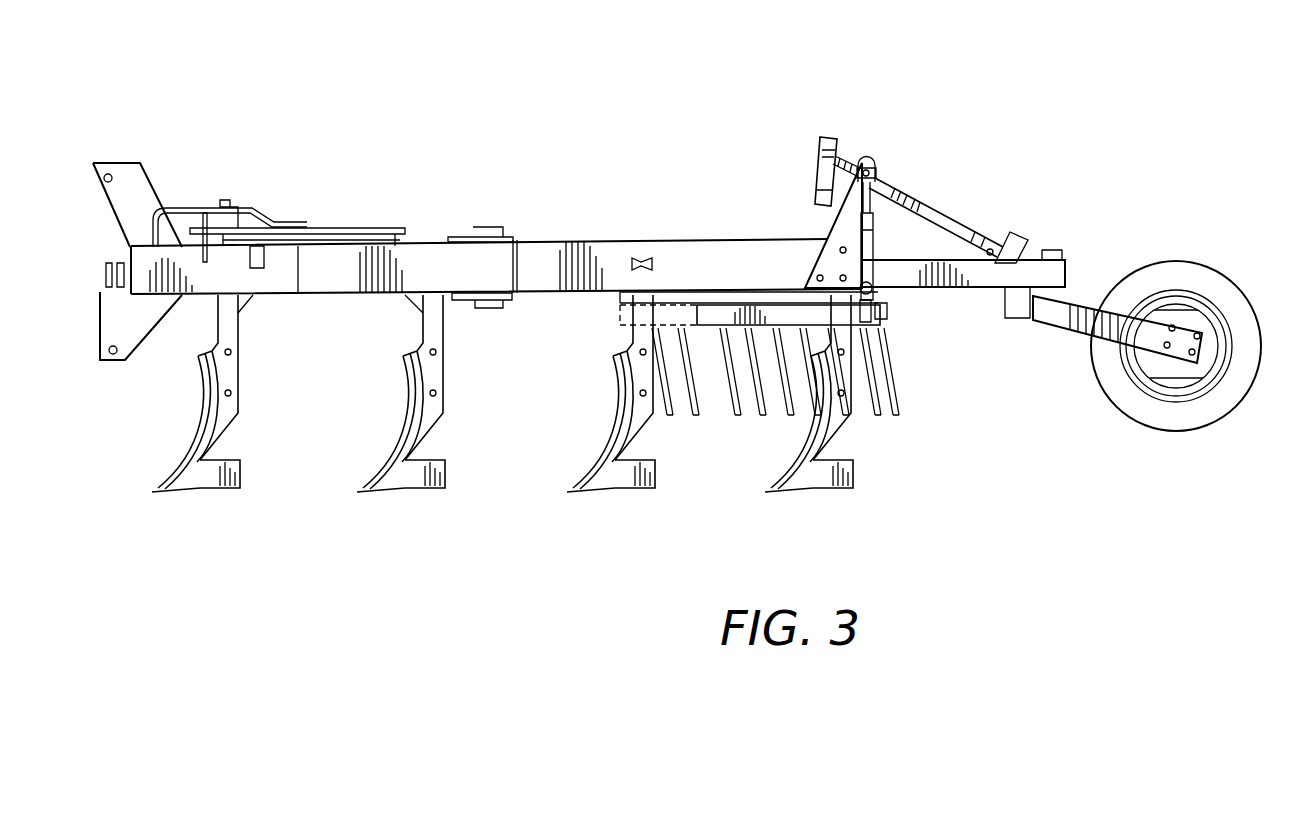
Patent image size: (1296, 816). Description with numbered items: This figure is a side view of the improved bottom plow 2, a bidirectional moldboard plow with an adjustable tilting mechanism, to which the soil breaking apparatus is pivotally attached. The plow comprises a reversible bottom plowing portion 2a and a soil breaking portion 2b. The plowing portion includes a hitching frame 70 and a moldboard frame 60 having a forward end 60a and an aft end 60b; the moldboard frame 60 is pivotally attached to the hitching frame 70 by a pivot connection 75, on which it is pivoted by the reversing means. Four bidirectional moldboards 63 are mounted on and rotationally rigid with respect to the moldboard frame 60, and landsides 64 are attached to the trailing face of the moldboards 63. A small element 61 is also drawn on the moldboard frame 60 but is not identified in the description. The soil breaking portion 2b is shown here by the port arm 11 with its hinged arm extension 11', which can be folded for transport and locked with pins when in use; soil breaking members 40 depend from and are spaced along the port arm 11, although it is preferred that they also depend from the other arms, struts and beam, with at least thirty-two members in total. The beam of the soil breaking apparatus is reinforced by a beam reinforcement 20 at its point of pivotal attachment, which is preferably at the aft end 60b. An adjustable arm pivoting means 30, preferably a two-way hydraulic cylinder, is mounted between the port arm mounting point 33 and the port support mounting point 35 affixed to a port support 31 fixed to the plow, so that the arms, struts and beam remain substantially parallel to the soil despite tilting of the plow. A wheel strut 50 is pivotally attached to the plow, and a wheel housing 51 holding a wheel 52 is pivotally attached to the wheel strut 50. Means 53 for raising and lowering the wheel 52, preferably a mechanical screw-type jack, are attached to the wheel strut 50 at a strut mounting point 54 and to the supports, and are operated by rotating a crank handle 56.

The improved bottom plow 2 is at (497, 72).
The reversible bottom plowing portion 2a is at (340, 150).
The soil breaking portion 2b is at (945, 138).
The port arm 11 is at (759, 280).
The hinged arm extension 11' is at (695, 291).
The beam reinforcement 20 is at (880, 328).
The adjustable arm pivoting means 30 is at (876, 244).
The port support 31 is at (828, 233).
The port arm mounting point 33 is at (878, 297).
The port support mounting point 35 is at (862, 155).
The soil breaking members 40 is at (738, 402).
The wheel strut 50 is at (990, 278).
The wheel housing 51 is at (1098, 296).
The wheel 52 is at (1154, 407).
The means for raising and lowering wheel 53 is at (948, 212).
The strut mounting point 54 is at (1012, 246).
The crank handle 56 is at (817, 157).
The moldboard frame 60 is at (556, 240).
The forward end 60a is at (195, 190).
The aft end 60b is at (935, 304).
The clip 61 is at (641, 258).
The bidirectional moldboards 63 is at (404, 406).
The landsides 64 is at (414, 486).
The hitching frame 70 is at (336, 276).
The pivot connection 75 is at (484, 228).